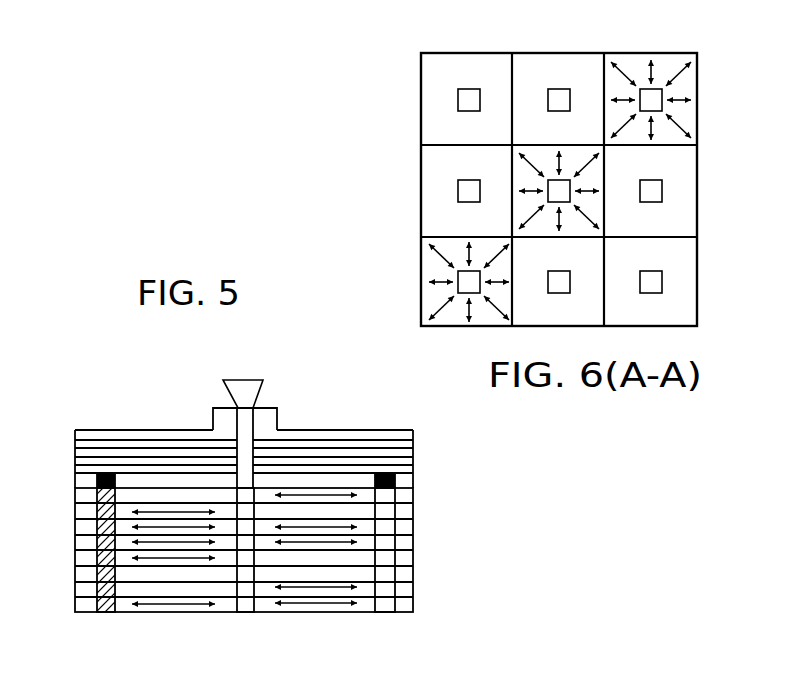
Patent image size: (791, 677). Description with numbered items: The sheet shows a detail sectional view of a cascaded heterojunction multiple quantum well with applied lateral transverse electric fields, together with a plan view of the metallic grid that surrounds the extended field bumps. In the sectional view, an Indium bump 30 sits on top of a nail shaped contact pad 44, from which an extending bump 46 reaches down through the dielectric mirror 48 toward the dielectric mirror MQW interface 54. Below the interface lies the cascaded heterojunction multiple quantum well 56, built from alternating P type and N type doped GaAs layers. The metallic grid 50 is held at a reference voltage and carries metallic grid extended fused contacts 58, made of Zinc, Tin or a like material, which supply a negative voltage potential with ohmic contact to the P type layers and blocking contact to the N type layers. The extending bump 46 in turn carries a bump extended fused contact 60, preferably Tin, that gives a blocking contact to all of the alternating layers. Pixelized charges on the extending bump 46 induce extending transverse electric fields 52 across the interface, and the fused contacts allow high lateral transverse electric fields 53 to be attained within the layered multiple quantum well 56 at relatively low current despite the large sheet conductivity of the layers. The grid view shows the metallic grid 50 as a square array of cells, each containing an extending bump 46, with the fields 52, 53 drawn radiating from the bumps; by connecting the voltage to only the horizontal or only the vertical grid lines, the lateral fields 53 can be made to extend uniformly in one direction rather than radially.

In FIG. 5, the Indium bump 30 is at (243, 380).
In FIG. 5, the nail shaped contact pad 44 is at (268, 407).
In FIG. 6A-A, the extending bump 46 is at (463, 88).
In FIG. 5, the extending bump 46 is at (253, 453).
In FIG. 5, the dielectric mirror 48 is at (76, 448).
In FIG. 6A-A, the metallic grid 50 is at (482, 53).
In FIG. 5, the metallic grid 50 is at (397, 480).
In FIG. 6A-A, the extending transverse electric field 52 is at (682, 128).
In FIG. 5, the extending transverse electric field 52 is at (320, 605).
In FIG. 6A-A, the lateral transverse electric field 53 is at (532, 188).
In FIG. 5, the lateral transverse electric field 53 is at (173, 558).
In FIG. 5, the dielectric mirror MQW interface 54 is at (412, 488).
In FIG. 5, the cascaded heterojunction multiple quantum well 56 is at (73, 553).
In FIG. 5, the metallic grid extended fused contact 58 is at (375, 612).
In FIG. 5, the bump extended fused contact 60 is at (238, 568).